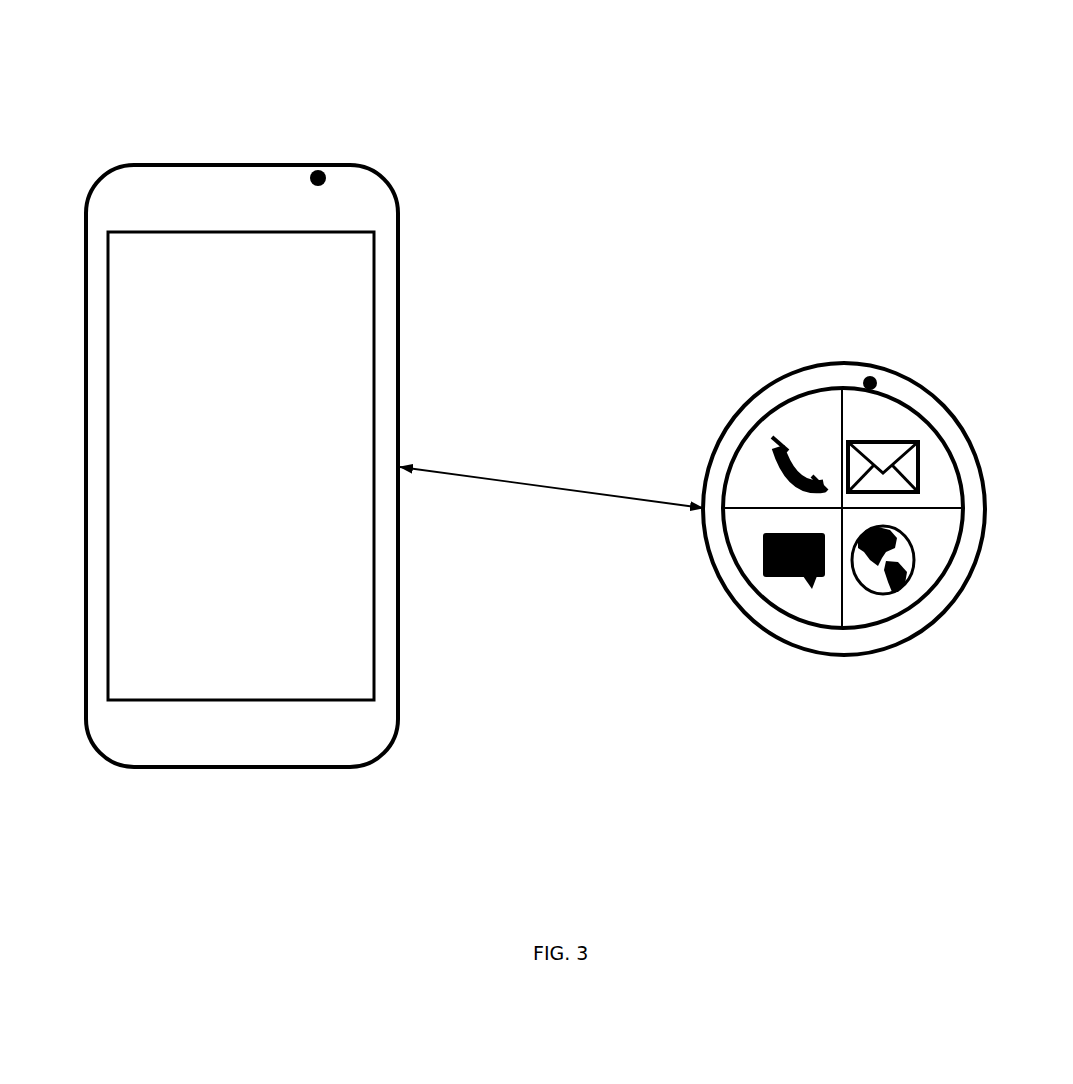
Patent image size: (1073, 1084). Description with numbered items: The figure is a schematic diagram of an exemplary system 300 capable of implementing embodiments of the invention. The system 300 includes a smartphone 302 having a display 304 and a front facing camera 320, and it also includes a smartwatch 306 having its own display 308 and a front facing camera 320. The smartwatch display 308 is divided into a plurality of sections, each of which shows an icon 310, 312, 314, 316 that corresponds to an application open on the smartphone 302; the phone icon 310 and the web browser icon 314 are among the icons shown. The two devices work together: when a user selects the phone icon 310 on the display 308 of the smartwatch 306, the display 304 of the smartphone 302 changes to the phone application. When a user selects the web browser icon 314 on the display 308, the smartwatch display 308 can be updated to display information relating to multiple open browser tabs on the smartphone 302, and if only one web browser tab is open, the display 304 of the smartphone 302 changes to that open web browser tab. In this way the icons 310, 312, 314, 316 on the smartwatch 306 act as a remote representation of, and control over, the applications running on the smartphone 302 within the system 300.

The system 300 is at (1003, 97).
The smartphone 302 is at (100, 163).
The display 304 is at (257, 291).
The smartwatch 306 is at (765, 386).
The display 308 is at (838, 385).
The phone icon 310 is at (760, 465).
The icon 312 is at (903, 436).
The web browser icon 314 is at (915, 578).
The icon 316 is at (777, 592).
The front facing camera 320 is at (330, 181).